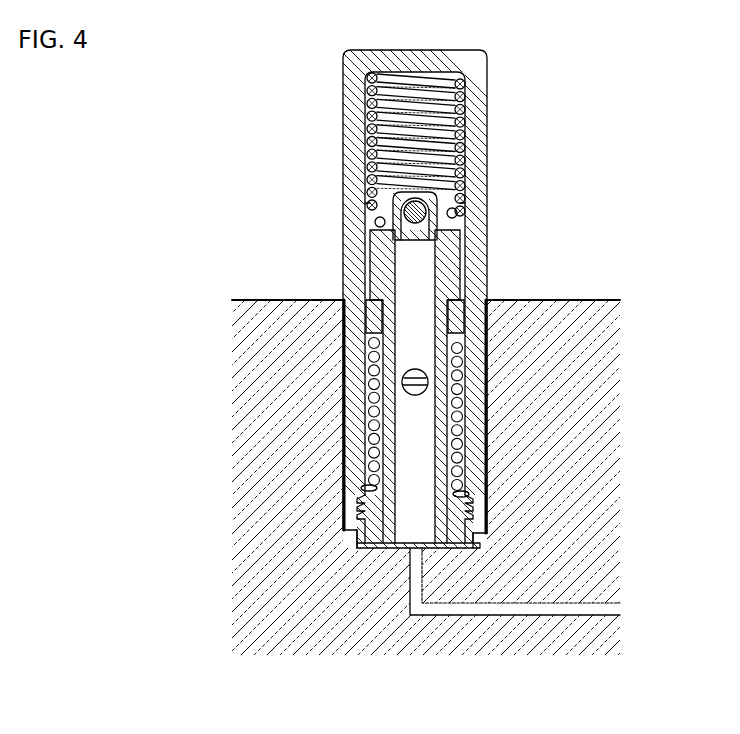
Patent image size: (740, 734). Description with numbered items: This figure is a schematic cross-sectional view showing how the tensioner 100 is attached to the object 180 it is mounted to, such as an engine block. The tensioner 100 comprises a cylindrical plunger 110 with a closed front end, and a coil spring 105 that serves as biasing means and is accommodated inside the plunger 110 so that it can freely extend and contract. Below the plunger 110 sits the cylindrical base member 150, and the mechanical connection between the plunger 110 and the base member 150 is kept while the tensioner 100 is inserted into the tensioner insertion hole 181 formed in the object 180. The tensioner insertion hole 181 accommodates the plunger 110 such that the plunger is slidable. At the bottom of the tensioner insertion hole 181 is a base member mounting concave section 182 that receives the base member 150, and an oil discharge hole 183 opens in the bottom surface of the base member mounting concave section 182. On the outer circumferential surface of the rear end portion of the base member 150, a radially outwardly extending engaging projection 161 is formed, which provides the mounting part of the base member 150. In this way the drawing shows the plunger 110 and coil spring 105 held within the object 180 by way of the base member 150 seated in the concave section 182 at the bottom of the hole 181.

The tensioner 100 is at (488, 75).
The coil spring 105 is at (487, 143).
The plunger 110 is at (487, 257).
The base member 150 is at (457, 549).
The engaging projection 161 is at (481, 546).
The object 180 is at (263, 300).
The tensioner insertion hole 181 is at (343, 372).
The base member mounting concave section 182 is at (357, 549).
The oil discharge hole 183 is at (412, 550).